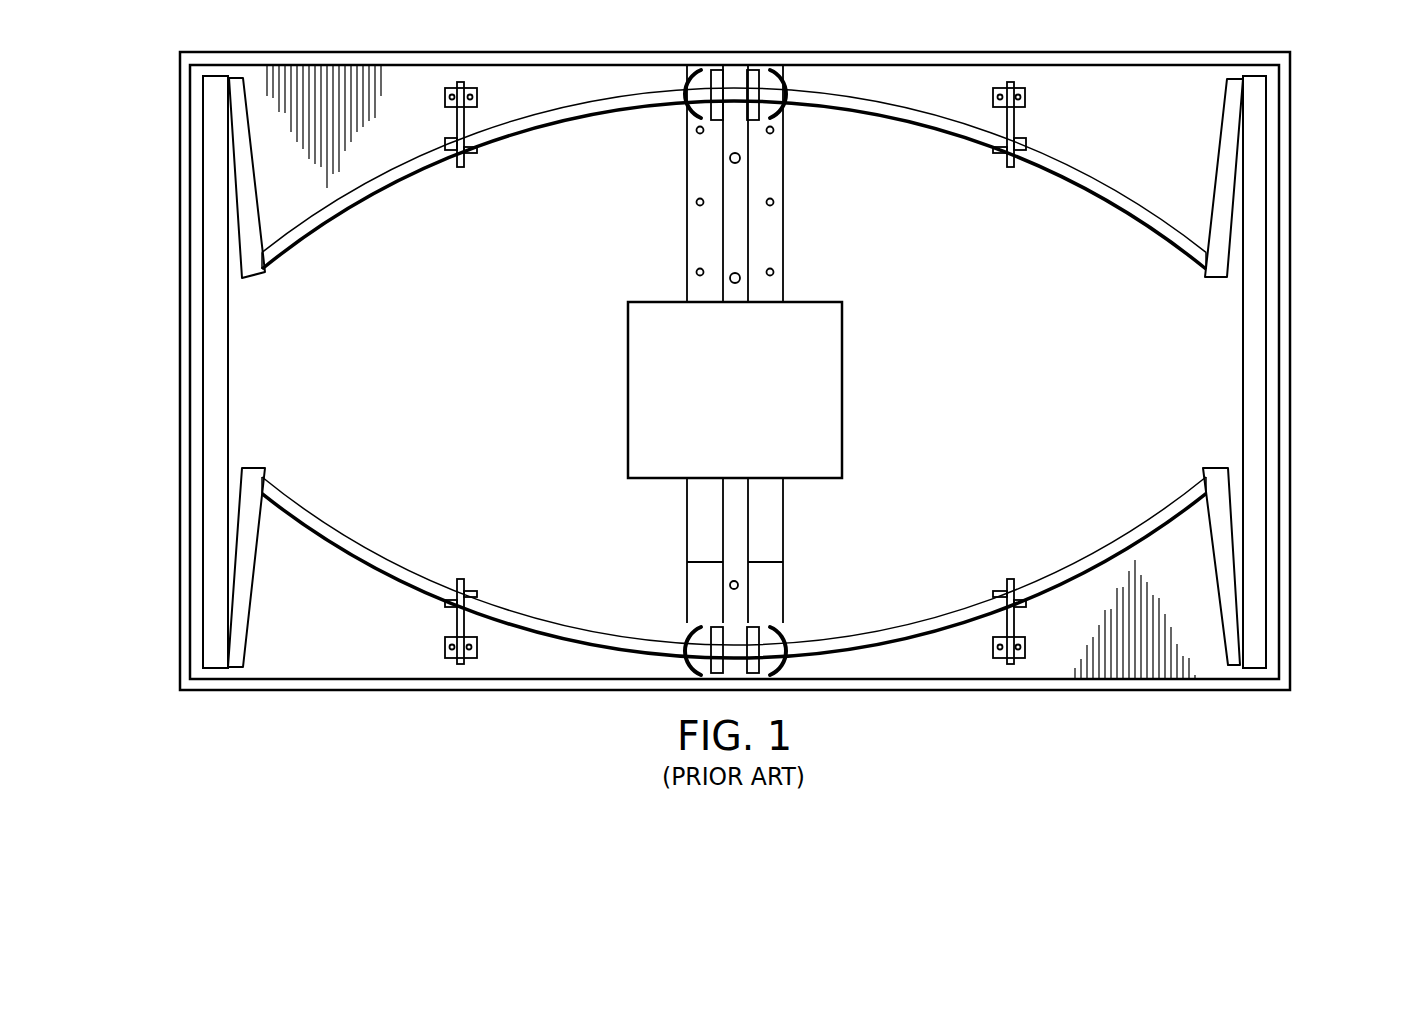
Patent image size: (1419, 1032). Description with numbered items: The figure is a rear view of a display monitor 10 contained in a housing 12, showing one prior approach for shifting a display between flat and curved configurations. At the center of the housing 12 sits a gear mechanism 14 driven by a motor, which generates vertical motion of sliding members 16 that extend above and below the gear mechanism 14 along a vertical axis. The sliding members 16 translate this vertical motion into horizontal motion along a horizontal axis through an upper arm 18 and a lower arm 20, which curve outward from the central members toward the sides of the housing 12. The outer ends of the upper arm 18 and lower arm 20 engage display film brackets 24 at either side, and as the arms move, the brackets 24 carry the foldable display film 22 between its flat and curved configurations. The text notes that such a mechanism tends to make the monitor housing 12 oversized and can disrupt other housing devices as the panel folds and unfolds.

The display monitor 10 is at (734, 371).
The housing 12 is at (178, 560).
The gear mechanism 14 is at (809, 381).
The sliding members 16 is at (642, 547).
The upper arm 18 is at (1125, 210).
The lower arm 20 is at (1087, 556).
The foldable display film 22 is at (431, 432).
The display film brackets 24 is at (213, 337).